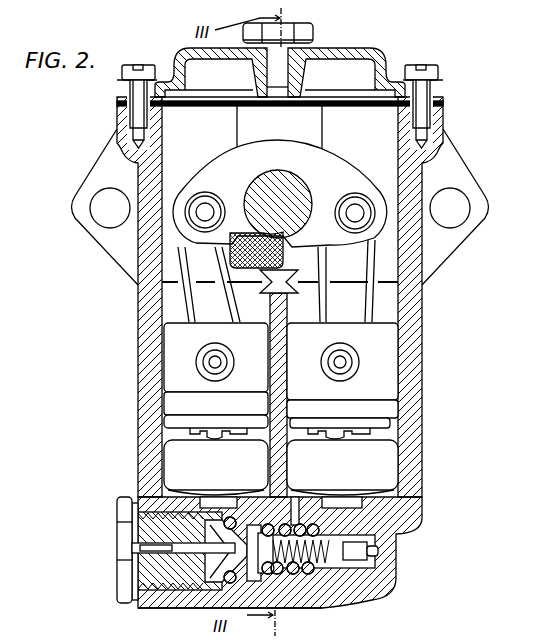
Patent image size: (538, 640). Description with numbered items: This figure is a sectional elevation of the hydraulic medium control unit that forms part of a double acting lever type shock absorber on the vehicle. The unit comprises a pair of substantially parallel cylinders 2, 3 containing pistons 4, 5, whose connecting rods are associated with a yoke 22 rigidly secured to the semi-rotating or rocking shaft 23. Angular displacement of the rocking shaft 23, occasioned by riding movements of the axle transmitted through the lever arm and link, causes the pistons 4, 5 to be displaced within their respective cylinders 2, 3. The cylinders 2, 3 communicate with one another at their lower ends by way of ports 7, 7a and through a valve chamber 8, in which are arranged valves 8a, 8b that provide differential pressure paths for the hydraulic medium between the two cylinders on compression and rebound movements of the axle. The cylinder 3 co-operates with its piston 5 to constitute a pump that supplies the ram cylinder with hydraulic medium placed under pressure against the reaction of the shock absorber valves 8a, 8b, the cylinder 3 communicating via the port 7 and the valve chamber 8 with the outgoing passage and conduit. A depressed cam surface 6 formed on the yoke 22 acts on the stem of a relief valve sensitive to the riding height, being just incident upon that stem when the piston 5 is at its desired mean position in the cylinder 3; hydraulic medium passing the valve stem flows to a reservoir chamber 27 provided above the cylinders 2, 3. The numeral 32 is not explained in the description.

The cylinder 2 is at (187, 450).
The cylinder 3 is at (373, 463).
The piston 4 is at (190, 370).
The piston 5 is at (373, 343).
The cam surface 6 is at (237, 240).
The port 7 is at (298, 512).
The port 7a is at (203, 512).
The valve chamber 8 is at (306, 574).
The valve 8a is at (292, 507).
The valve 8b is at (213, 588).
The yoke 22 is at (328, 175).
The rocking shaft 23 is at (277, 207).
The reservoir chamber 27 is at (372, 123).
The bottom face 32 is at (238, 624).